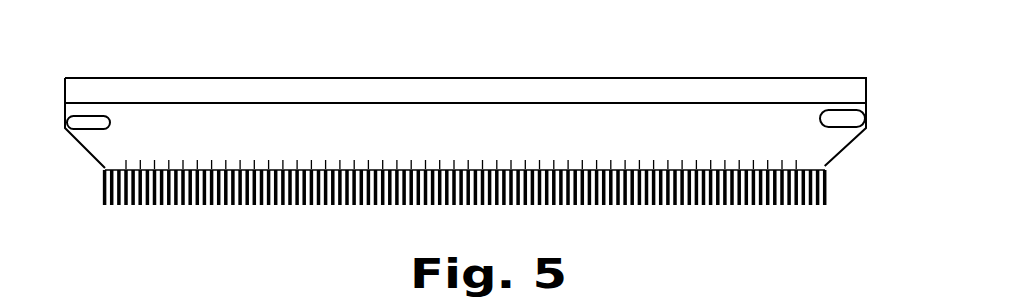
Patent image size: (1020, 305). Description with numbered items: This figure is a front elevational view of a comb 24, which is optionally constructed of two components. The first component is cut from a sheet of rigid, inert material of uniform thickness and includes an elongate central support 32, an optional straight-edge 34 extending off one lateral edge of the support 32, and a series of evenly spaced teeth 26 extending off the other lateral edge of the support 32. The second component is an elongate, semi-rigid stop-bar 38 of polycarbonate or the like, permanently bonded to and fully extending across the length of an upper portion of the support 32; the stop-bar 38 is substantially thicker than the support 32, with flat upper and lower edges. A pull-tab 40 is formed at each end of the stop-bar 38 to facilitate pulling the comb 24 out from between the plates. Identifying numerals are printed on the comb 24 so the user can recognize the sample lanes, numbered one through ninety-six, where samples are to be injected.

The comb 24 is at (477, 112).
The teeth 26 is at (833, 167).
The central support 32 is at (868, 104).
The straight-edge 34 is at (868, 78).
The stop-bar 38 is at (435, 117).
The pull-tab 40 is at (97, 120).